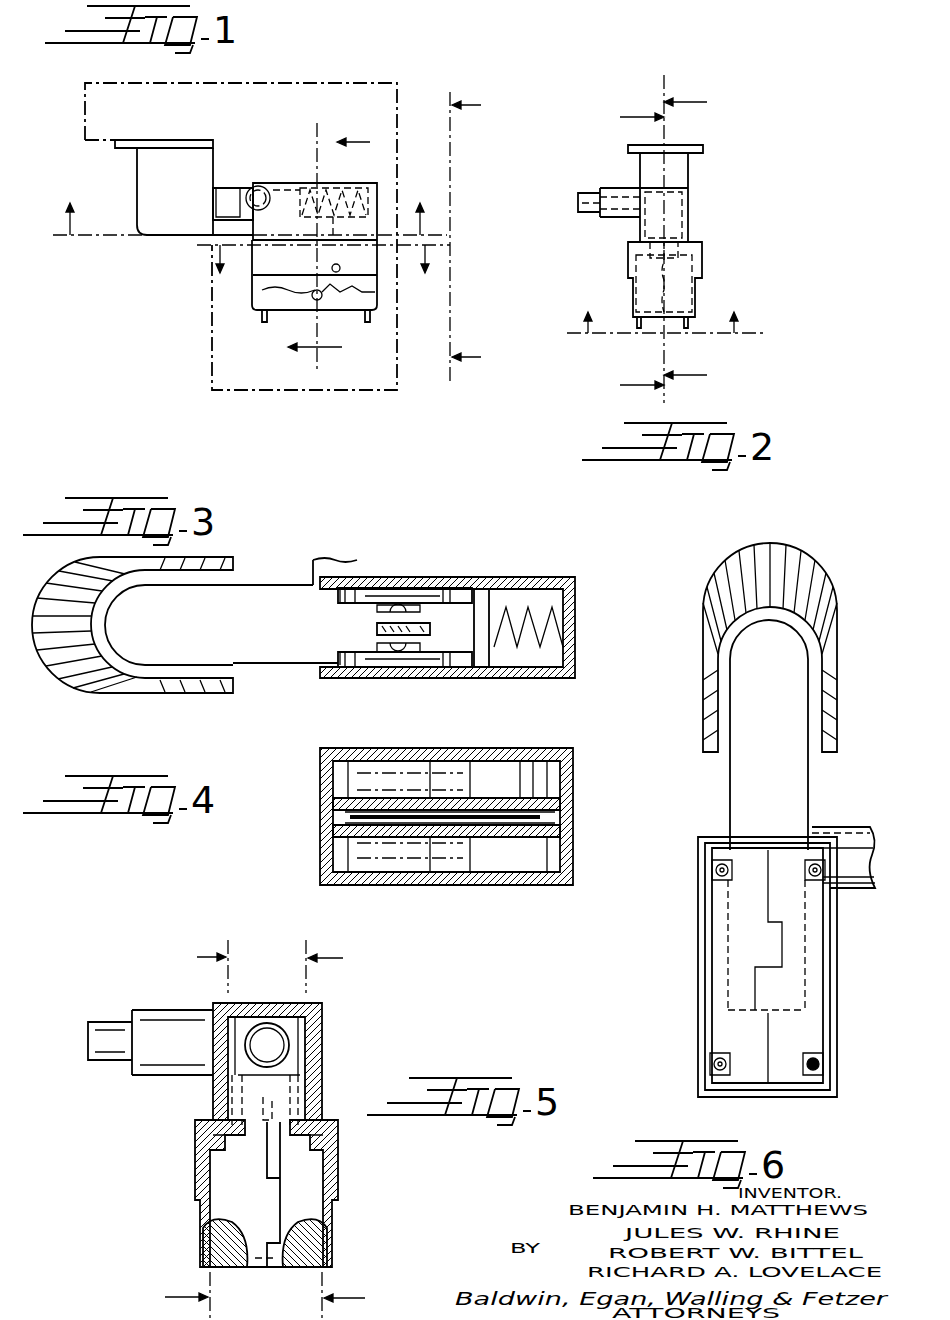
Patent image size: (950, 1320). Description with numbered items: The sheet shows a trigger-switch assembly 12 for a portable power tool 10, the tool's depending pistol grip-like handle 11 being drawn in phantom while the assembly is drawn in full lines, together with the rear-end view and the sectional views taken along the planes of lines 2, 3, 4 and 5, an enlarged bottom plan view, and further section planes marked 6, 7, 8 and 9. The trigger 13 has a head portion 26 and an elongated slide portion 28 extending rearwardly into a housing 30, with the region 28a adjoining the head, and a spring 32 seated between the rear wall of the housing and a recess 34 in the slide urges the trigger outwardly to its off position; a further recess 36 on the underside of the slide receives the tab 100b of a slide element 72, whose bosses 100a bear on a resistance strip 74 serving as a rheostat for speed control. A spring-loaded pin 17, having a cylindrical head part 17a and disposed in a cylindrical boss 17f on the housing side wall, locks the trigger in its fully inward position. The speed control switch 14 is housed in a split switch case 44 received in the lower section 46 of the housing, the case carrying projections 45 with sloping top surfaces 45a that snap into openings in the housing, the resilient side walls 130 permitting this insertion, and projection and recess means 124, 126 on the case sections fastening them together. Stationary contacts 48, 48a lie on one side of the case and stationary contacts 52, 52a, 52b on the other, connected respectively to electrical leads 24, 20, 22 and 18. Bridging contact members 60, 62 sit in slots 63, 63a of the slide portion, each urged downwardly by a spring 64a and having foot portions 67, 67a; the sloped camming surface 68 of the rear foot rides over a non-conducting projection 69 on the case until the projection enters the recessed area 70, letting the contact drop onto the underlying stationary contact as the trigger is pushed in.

In FIG. 1, the power tool 10 is at (366, 384).
In FIG. 5, the power tool 10 is at (353, 1130).
In FIG. 1, the handle 11 is at (212, 318).
In FIG. 1, the trigger-switch assembly 12 is at (157, 249).
In FIG. 1, the trigger 13 is at (137, 202).
In FIG. 2, the trigger 13 is at (705, 148).
In FIG. 3, the trigger 13 is at (132, 625).
In FIG. 6, the trigger 13 is at (828, 574).
In FIG. 1, the speed control switch 14 is at (383, 310).
In FIG. 1, the spring-loaded pin 17 is at (266, 185).
In FIG. 2, the spring-loaded pin 17 is at (605, 188).
In FIG. 3, the spring-loaded pin 17 is at (313, 565).
In FIG. 5, the spring-loaded pin 17 is at (100, 1030).
In FIG. 6, the spring-loaded pin 17 is at (856, 838).
In FIG. 2, the cylindrical head part 17a is at (578, 203).
In FIG. 2, the cylindrical boss 17f is at (605, 218).
In FIG. 1, the electrical lead 18 is at (376, 325).
In FIG. 2, the electrical lead 18 is at (638, 330).
In FIG. 6, the electrical lead 18 is at (717, 1065).
In FIG. 1, the electrical lead 20 is at (367, 324).
In FIG. 2, the electrical lead 20 is at (690, 330).
In FIG. 6, the electrical lead 20 is at (817, 1065).
In FIG. 1, the electrical lead 22 is at (262, 322).
In FIG. 6, the electrical lead 22 is at (722, 858).
In FIG. 1, the electrical lead 24 is at (270, 326).
In FIG. 6, the electrical lead 24 is at (815, 858).
In FIG. 1, the head portion 26 is at (184, 191).
In FIG. 2, the head portion 26 is at (670, 170).
In FIG. 3, the head portion 26 is at (205, 573).
In FIG. 6, the head portion 26 is at (822, 616).
In FIG. 1, the slide portion 28 is at (228, 196).
In FIG. 3, the slide portion 28 is at (172, 642).
In FIG. 6, the slide portion 28 is at (764, 687).
In FIG. 1, the loop attachment 28a is at (228, 192).
In FIG. 1, the housing 30 is at (377, 183).
In FIG. 2, the housing 30 is at (672, 238).
In FIG. 3, the housing 30 is at (467, 604).
In FIG. 4, the housing 30 is at (572, 814).
In FIG. 5, the housing 30 is at (322, 1020).
In FIG. 1, the spring 32 is at (342, 188).
In FIG. 3, the spring 32 is at (550, 625).
In FIG. 5, the spring 32 is at (257, 1023).
In FIG. 1, the recess 34 is at (320, 187).
In FIG. 3, the recess 36 is at (377, 628).
In FIG. 4, the switch case 44 is at (563, 800).
In FIG. 5, the switch case 44 is at (225, 1170).
In FIG. 6, the switch case 44 is at (720, 929).
In FIG. 1, the projections 45 is at (348, 297).
In FIG. 5, the projections 45 is at (203, 1239).
In FIG. 1, the sloping top surfaces 45a is at (317, 293).
In FIG. 5, the sloping top surfaces 45a is at (200, 1230).
In FIG. 1, the lower section 46 is at (300, 292).
In FIG. 5, the lower section 46 is at (200, 1256).
In FIG. 6, the lower section 46 is at (705, 966).
In FIG. 4, the stationary contact 48 is at (372, 862).
In FIG. 4, the stationary contact 48a is at (523, 860).
In FIG. 5, the stationary contact 48a is at (193, 1159).
In FIG. 4, the stationary contact element 52 is at (367, 763).
In FIG. 4, the stationary contact element 52a is at (480, 773).
In FIG. 4, the stationary contact element 52b is at (532, 768).
In FIG. 5, the stationary contact element 52b is at (340, 1139).
In FIG. 3, the bridging contact member 60 is at (488, 590).
In FIG. 4, the bridging contact member 60 is at (410, 860).
In FIG. 5, the bridging contact member 60 is at (225, 1093).
In FIG. 3, the bridging contact member 62 is at (457, 653).
In FIG. 4, the bridging contact member 62 is at (408, 770).
In FIG. 5, the bridging contact member 62 is at (320, 1070).
In FIG. 3, the slot 63 is at (336, 598).
In FIG. 3, the slot 63a is at (336, 654).
In FIG. 3, the spring 64a is at (403, 588).
In FIG. 3, the foot portion 67 is at (358, 588).
In FIG. 3, the foot portion 67a is at (474, 660).
In FIG. 3, the sloped camming surface 68 is at (460, 590).
In FIG. 4, the projection 69 is at (447, 770).
In FIG. 5, the projection 69 is at (313, 1122).
In FIG. 3, the recessed area 70 is at (377, 590).
In FIG. 3, the slide element 72 is at (422, 608).
In FIG. 4, the slide element 72 is at (335, 866).
In FIG. 4, the resistance strip 74 is at (390, 800).
In FIG. 4, the bosses 100a is at (337, 808).
In FIG. 3, the tab 100b is at (377, 635).
In FIG. 5, the projection means 124 is at (278, 1179).
In FIG. 5, the recess means 126 is at (277, 1187).
In FIG. 6, the side walls 130 is at (702, 1034).
In FIG. 1, the section line 2- 2 is at (477, 237).
In FIG. 1, the section line 3- 3 is at (250, 205).
In FIG. 1, the section line 4- 4 is at (323, 276).
In FIG. 1, the section line 5- 5 is at (317, 246).
In FIG. 2, the section line 6- 6 is at (665, 307).
In FIG. 5, the section line 7- 7 is at (183, 1130).
In FIG. 2, the section line 8- 8 is at (694, 237).
In FIG. 2, the section line 9- 9 is at (629, 251).